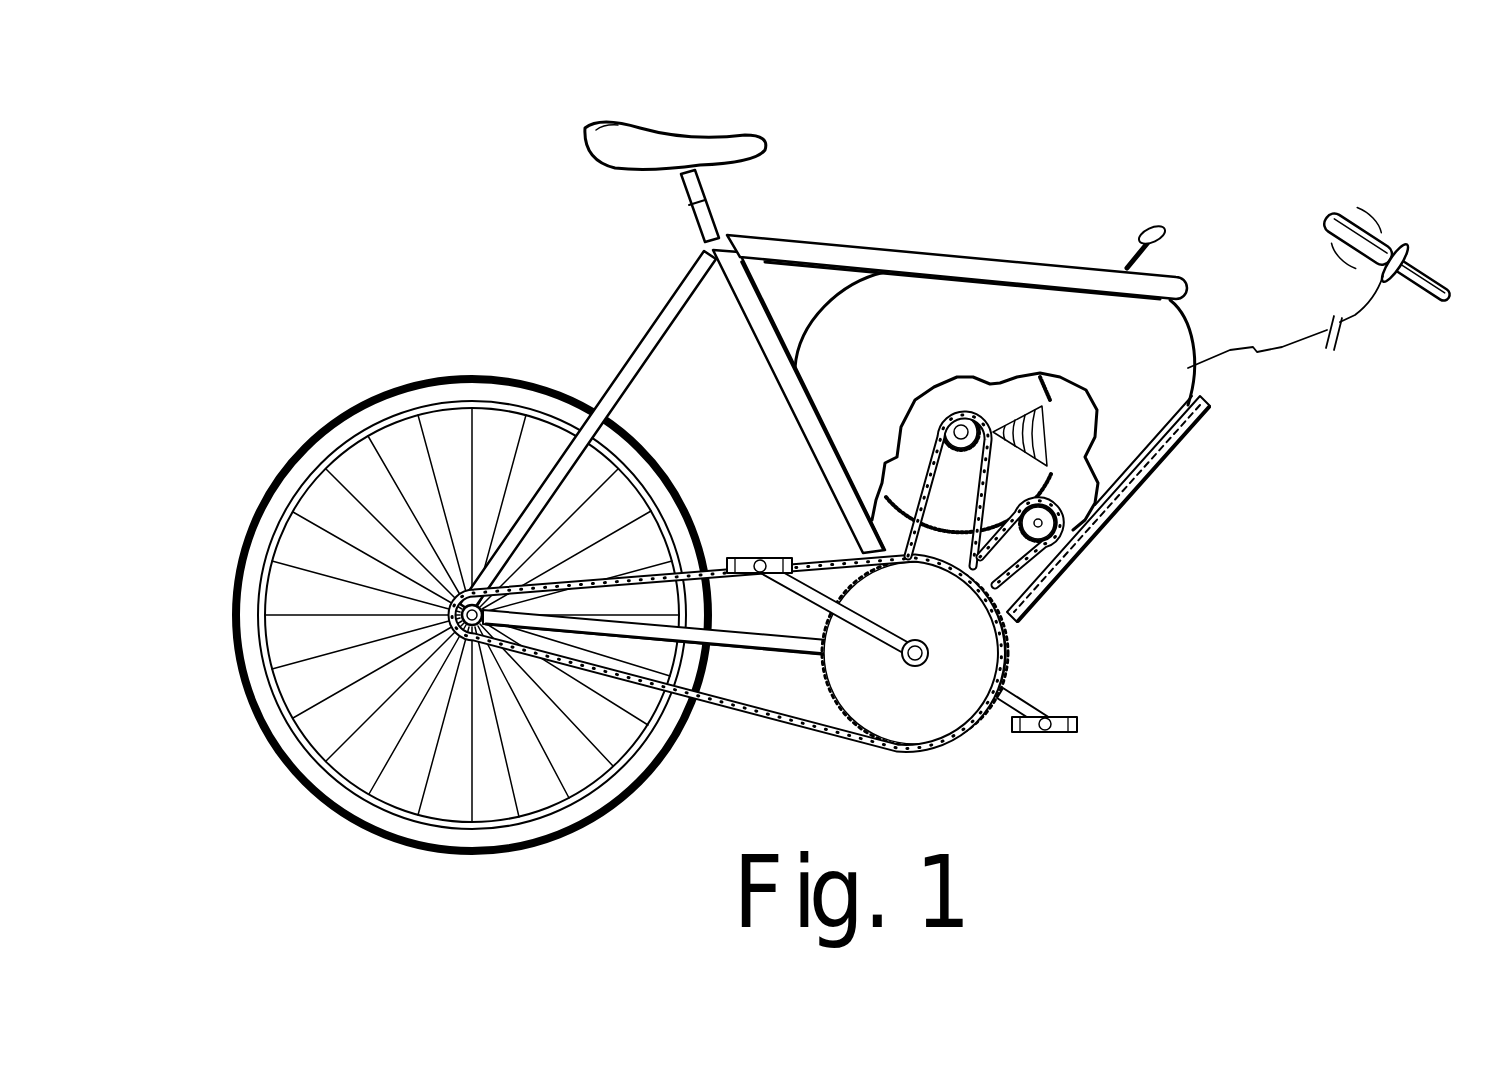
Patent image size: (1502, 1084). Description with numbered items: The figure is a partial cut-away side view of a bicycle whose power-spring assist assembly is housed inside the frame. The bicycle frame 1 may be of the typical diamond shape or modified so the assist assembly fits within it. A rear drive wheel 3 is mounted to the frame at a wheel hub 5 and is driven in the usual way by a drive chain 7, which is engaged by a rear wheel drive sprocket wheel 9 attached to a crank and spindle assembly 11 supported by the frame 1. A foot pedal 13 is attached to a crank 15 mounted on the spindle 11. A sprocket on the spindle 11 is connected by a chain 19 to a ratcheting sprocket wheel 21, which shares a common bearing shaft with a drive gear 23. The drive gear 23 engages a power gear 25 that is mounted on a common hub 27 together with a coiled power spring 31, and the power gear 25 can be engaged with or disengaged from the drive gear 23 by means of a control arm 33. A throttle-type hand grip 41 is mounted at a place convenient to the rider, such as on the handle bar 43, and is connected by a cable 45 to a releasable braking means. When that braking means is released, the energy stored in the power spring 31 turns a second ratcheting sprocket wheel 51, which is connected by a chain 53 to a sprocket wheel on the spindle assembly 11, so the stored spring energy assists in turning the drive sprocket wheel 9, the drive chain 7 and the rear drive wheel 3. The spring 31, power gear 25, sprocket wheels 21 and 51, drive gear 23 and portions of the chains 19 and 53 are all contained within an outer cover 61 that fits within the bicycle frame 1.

The bicycle frame 1 is at (812, 246).
The rear drive wheel 3 is at (576, 828).
The wheel hub 5 is at (452, 618).
The drive chain 7 is at (778, 720).
The rear wheel drive sprocket wheel 9 is at (940, 718).
The crank and spindle assembly 11 is at (910, 658).
The foot pedal 13 is at (777, 556).
The crank 15 is at (780, 633).
The chain 19 is at (1013, 572).
The ratcheting sprocket wheel 21 is at (1070, 530).
The drive gear 23 is at (980, 527).
The power gear 25 is at (1066, 404).
The common hub 27 is at (961, 432).
The coiled power spring 31 is at (995, 432).
The control arm 33 is at (1147, 255).
The throttle-type hand grip 41 is at (1337, 218).
The handle bar 43 is at (1418, 272).
The cable 45 is at (1277, 349).
The ratcheting sprocket wheel 51 is at (967, 410).
The chain 53 is at (907, 397).
The outer cover 61 is at (1153, 327).